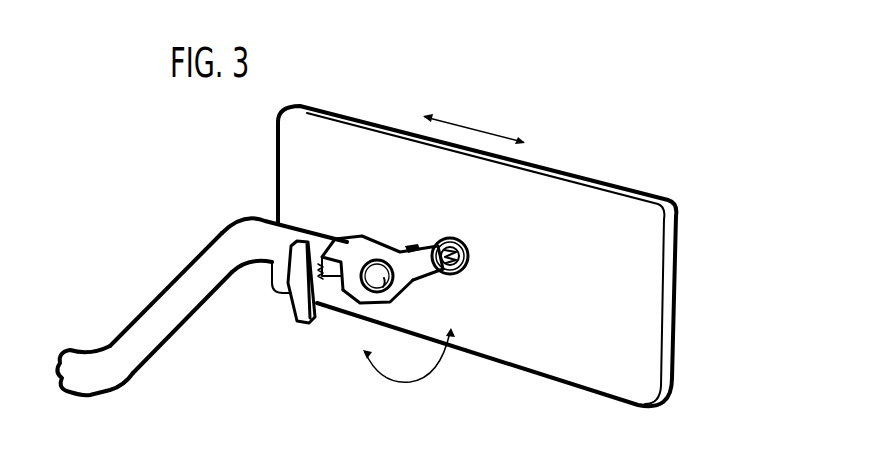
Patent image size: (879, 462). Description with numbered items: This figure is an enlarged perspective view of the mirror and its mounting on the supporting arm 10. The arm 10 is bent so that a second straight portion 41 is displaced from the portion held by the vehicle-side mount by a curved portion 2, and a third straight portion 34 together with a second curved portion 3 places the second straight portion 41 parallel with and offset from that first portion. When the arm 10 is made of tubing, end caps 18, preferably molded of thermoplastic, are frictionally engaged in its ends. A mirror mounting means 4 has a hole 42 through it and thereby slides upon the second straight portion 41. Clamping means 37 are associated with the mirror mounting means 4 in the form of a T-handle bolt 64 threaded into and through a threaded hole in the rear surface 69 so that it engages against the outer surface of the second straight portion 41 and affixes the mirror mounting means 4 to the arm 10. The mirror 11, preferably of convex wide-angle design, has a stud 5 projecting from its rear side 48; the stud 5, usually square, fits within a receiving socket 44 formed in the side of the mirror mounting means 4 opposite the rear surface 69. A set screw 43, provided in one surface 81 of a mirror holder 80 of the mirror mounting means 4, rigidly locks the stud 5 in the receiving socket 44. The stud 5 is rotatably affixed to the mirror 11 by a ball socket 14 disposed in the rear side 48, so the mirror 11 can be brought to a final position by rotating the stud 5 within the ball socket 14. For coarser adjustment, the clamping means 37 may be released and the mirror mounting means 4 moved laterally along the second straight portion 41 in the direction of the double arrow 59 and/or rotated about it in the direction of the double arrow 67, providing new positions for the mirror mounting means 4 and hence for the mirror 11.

The curved portion 2 is at (110, 377).
The second curved portion 3 is at (248, 237).
The mirror mounting means 4 is at (343, 245).
The stud 5 is at (470, 258).
The arm 10 is at (165, 280).
The mirror 11 is at (597, 370).
The ball socket 14 is at (465, 250).
The end caps 18 is at (377, 266).
The third straight portion 34 is at (167, 322).
The clamping means 37 is at (263, 278).
The second straight portion 41 is at (273, 242).
The hole 42 is at (387, 290).
The set screw 43 is at (432, 242).
The receiving socket 44 is at (423, 282).
The rear side 48 is at (627, 260).
The double arrow 59 is at (474, 115).
The T-handle bolt 64 is at (298, 287).
The double arrow 67 is at (409, 377).
The rear surface 69 is at (341, 276).
The mirror holder 80 is at (447, 275).
The surface 81 is at (407, 240).